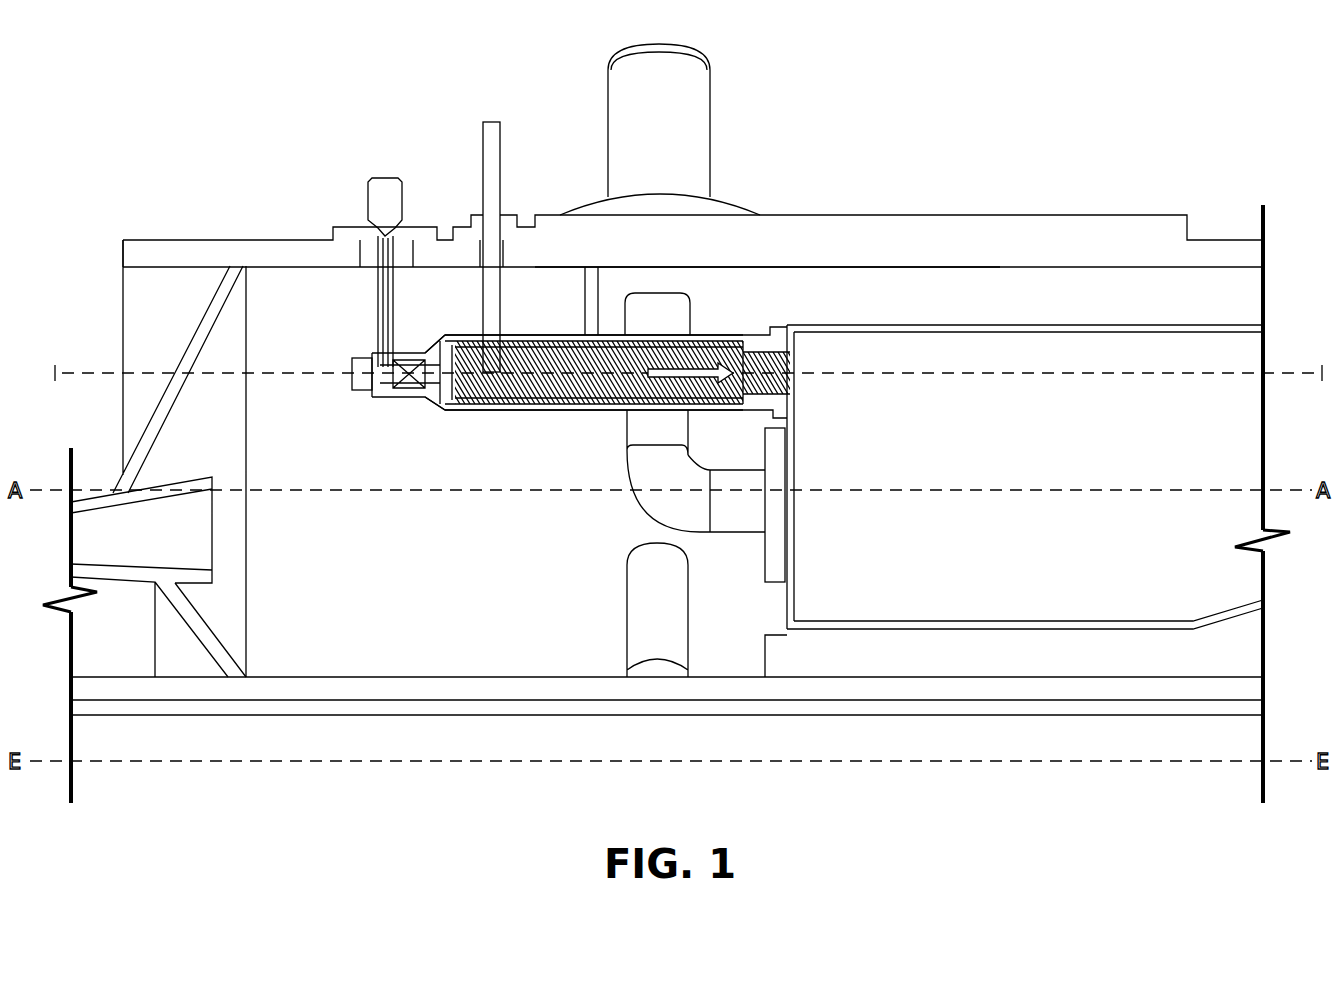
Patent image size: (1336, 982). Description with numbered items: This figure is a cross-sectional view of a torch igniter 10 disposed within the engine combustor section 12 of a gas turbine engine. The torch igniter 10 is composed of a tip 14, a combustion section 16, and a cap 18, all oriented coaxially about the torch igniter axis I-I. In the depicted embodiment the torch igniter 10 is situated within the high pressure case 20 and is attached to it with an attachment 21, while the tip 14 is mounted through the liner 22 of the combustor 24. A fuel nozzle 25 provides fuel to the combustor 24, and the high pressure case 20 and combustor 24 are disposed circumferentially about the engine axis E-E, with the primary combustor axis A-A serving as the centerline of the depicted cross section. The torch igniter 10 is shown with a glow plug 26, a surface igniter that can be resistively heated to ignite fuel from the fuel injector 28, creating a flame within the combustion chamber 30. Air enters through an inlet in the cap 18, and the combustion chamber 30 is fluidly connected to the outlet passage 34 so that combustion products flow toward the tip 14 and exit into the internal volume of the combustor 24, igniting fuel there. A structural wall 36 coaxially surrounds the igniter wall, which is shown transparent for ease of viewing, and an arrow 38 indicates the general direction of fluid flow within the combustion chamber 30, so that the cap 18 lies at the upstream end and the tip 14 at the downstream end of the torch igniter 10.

The torch igniter 10 is at (552, 410).
The engine combustor section 12 is at (293, 192).
The tip 14 is at (745, 285).
The combustion section 16 is at (532, 423).
The cap 18 is at (410, 423).
The high pressure case 20 is at (1015, 212).
The attachment 21 is at (606, 288).
The liner 22 is at (1068, 323).
The combustor 24 is at (1236, 462).
The fuel nozzle 25 is at (735, 520).
The glow plug 26 is at (478, 305).
The fuel injector 28 is at (366, 197).
The combustion chamber 30 is at (540, 335).
The outlet passage 34 is at (800, 368).
The structural wall 36 is at (478, 410).
The arrow 38 is at (703, 338).